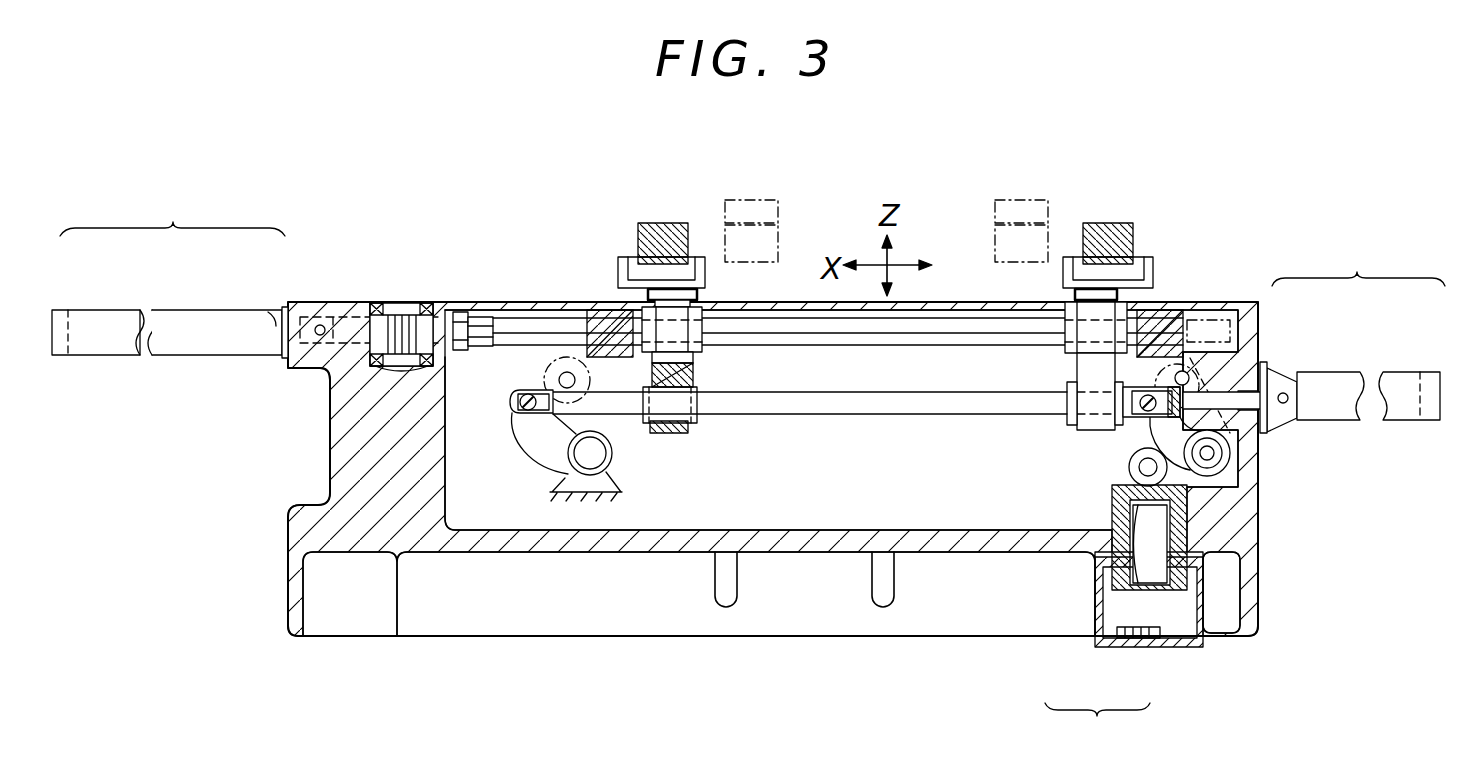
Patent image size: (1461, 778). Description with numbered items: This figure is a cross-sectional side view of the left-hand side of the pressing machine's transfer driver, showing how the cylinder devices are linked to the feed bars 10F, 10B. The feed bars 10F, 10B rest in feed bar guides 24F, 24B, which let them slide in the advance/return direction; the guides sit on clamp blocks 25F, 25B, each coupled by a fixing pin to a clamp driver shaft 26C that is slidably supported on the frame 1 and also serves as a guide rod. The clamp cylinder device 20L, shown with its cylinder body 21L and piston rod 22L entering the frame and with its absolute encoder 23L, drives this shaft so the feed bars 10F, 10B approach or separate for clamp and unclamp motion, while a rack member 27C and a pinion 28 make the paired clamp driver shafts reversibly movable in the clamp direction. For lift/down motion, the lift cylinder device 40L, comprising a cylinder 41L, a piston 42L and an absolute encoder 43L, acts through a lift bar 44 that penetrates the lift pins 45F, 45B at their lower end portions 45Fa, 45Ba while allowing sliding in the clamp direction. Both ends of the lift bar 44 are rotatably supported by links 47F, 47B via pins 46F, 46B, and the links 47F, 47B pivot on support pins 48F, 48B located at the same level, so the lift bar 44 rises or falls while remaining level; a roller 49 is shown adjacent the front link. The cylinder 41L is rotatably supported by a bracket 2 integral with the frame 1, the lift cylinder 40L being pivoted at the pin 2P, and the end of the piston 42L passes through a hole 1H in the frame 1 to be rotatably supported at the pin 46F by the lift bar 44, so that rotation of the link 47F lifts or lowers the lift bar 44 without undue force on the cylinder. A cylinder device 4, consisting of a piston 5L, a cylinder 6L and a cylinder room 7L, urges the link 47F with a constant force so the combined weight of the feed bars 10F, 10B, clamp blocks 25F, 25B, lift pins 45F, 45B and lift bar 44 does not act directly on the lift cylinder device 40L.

The frame 1 is at (1258, 598).
The hole 1H is at (1250, 412).
The bracket 2 is at (1277, 412).
The pin 2P is at (1313, 408).
The cylinder device 4 is at (1121, 620).
The piston 5L is at (1097, 600).
The cylinder 6L is at (1122, 633).
The cylinder room 7L is at (1147, 630).
The feed bar 10B is at (725, 250).
The feed bar 10F is at (1038, 243).
The clamp cylinder device 20L is at (171, 269).
The left shaft 21L is at (185, 318).
The left shaft flange 22L is at (266, 312).
The absolute encoder 23L is at (67, 310).
The feed bar guide 24B is at (625, 272).
The feed bar guide 24F is at (1150, 280).
The clamp block 25B is at (705, 335).
The clamp block 25F is at (1068, 335).
The clamp driver shaft 26C is at (545, 325).
The rack member 27C is at (470, 310).
The pinion 28 is at (400, 303).
The lift cylinder device 40L is at (1352, 336).
The cylinder 41L is at (1337, 372).
The piston 42L is at (1262, 365).
The absolute encoder 43L is at (1425, 372).
The lift bar 44 is at (858, 400).
The lift pin 45B is at (695, 375).
The lower end portion 45Ba is at (688, 428).
The lift pin 45F is at (1080, 375).
The lower end portion 45Fa is at (1080, 428).
The pin 46B is at (518, 420).
The pin 46F is at (1140, 420).
The link 47B is at (540, 445).
The link 47F is at (1200, 475).
The support pin 48B is at (592, 455).
The support pin 48F is at (1220, 462).
The roller 49 is at (1135, 472).